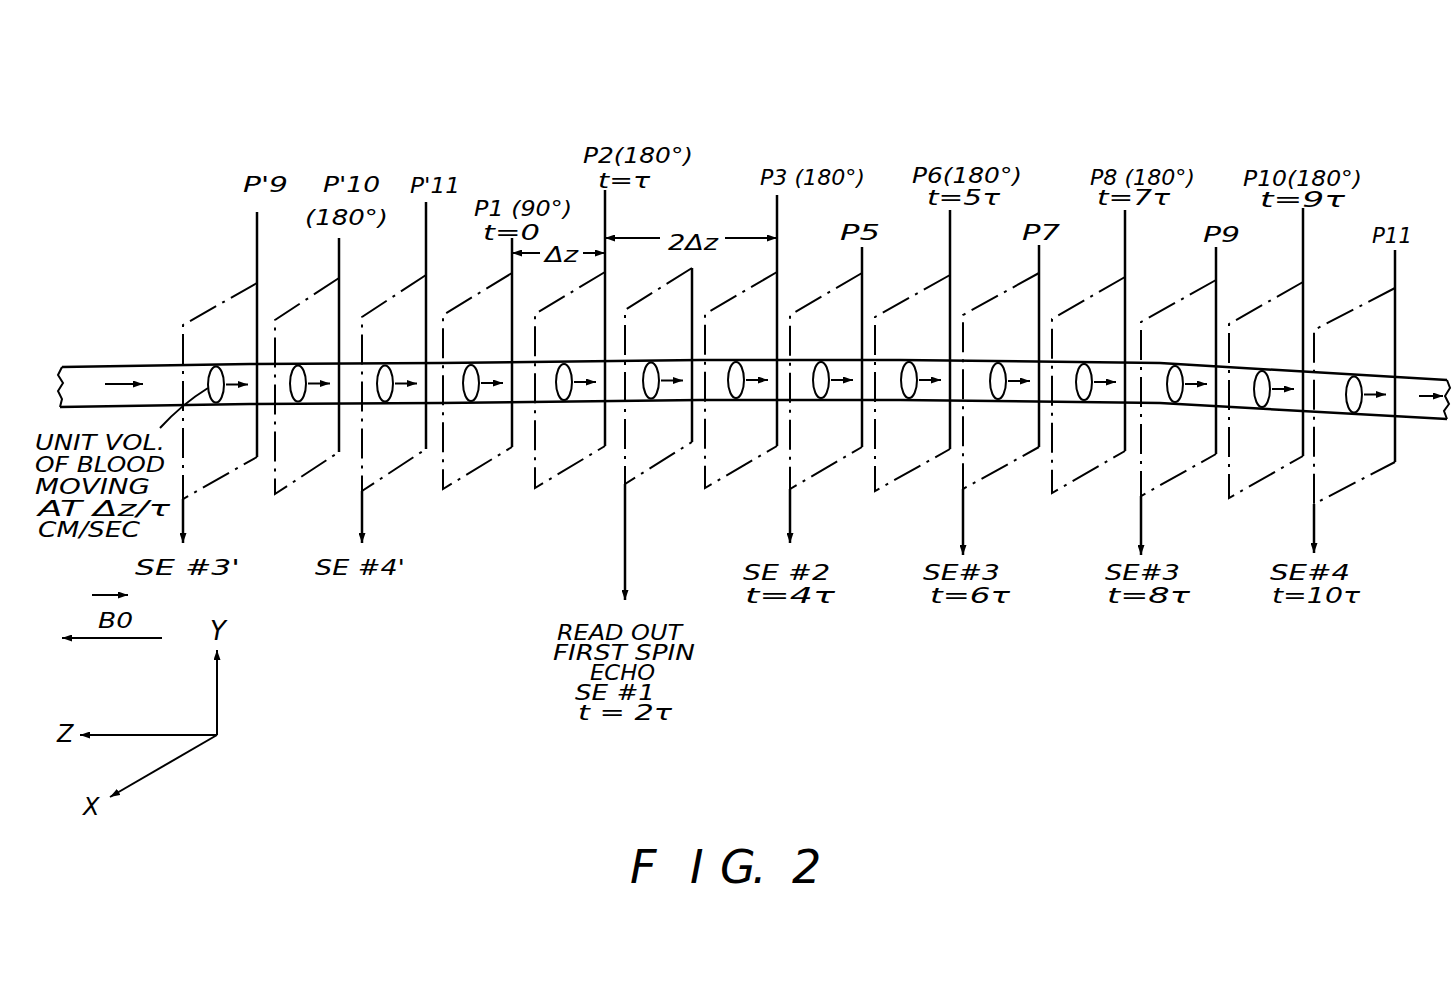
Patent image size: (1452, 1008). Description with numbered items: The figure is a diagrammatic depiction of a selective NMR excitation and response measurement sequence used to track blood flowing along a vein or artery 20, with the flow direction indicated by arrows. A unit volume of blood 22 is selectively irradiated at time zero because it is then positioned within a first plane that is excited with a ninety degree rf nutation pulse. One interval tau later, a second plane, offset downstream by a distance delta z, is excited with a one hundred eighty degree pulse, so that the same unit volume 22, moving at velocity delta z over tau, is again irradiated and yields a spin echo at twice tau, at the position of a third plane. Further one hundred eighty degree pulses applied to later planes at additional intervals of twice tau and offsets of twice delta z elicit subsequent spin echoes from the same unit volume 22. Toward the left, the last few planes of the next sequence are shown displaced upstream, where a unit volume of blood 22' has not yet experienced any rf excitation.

The vein or artery 20 is at (110, 365).
The unit volume of blood 22 is at (881, 407).
The unit volume of blood 22' is at (245, 410).